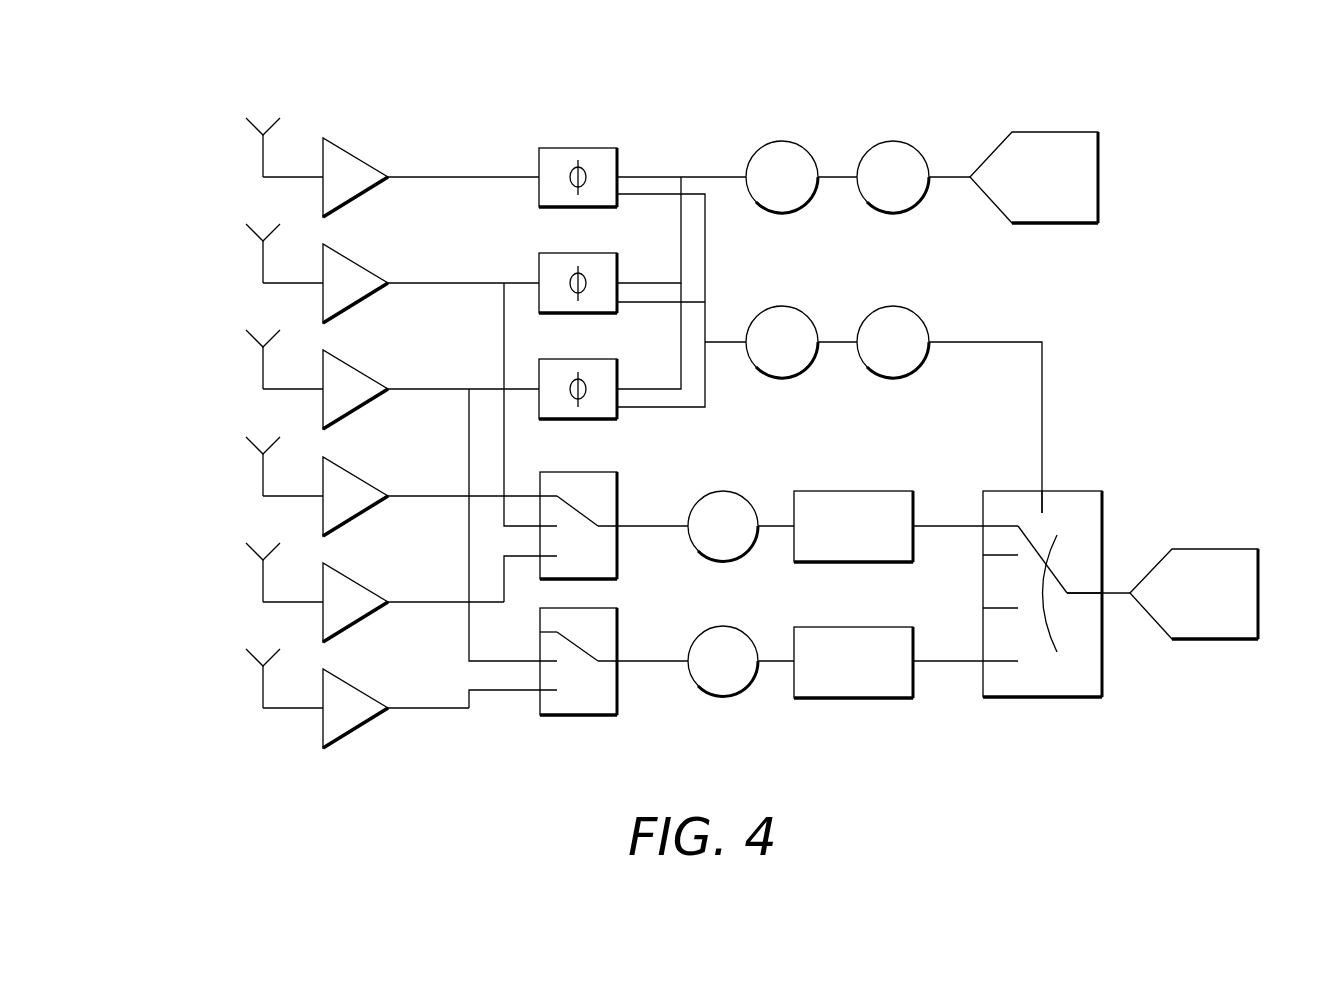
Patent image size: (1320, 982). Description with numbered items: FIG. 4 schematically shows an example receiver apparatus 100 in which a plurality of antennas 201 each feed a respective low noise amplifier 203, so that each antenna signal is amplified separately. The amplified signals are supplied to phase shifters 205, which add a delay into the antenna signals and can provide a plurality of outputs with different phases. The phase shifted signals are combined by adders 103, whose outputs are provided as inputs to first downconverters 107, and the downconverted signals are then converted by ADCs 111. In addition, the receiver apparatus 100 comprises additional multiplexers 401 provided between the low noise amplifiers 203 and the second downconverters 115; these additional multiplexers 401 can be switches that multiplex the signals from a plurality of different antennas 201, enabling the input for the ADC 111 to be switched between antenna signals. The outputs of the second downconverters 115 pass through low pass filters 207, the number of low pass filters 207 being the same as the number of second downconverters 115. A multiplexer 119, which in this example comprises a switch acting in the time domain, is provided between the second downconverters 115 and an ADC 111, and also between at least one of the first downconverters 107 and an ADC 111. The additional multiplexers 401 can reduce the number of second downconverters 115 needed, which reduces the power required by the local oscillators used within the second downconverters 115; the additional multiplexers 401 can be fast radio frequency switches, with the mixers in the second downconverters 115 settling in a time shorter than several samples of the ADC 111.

The receiver apparatus 100 is at (283, 71).
The antennas 201 is at (250, 652).
The low noise amplifiers 203 is at (353, 154).
The phase shifters 205 is at (606, 359).
The additional multiplexers 401 is at (620, 565).
The second downconverters 115 is at (723, 733).
The low pass filters 207 is at (862, 733).
The adders 103 is at (782, 306).
The first downconverters 107 is at (893, 306).
The ADCs 111 is at (1218, 549).
The multiplexer 119 is at (1063, 697).